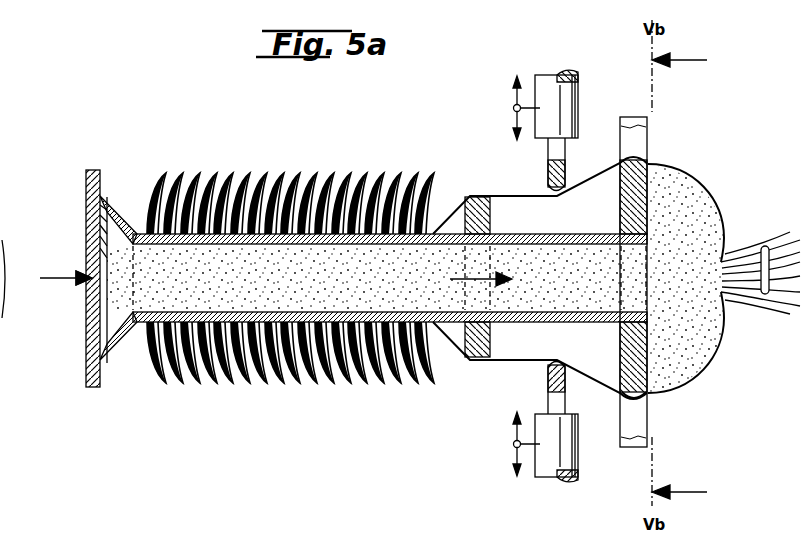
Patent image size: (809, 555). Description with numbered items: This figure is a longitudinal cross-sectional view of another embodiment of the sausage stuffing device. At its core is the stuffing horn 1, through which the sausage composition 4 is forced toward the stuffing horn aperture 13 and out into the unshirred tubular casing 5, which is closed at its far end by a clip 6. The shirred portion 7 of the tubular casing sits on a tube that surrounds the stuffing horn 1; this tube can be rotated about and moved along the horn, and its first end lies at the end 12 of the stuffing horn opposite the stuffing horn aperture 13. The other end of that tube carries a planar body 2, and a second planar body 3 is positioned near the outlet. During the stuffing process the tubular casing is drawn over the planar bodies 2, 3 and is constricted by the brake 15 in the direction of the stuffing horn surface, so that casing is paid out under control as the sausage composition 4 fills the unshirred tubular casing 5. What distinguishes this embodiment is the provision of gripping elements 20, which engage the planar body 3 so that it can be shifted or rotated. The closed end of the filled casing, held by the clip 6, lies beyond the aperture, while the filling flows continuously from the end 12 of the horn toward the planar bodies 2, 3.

The stuffing horn 1 is at (512, 322).
The planar body 2 is at (478, 350).
The planar body 3 is at (616, 386).
The sausage composition 4 is at (378, 293).
The unshirred tubular casing 5 is at (509, 196).
The closure tie 6 is at (765, 246).
The shirred portion 7 is at (341, 173).
The end of the stuffing horn 12 is at (113, 208).
The stuffing horn aperture 13 is at (650, 291).
The brake 15 is at (578, 96).
The gripping elements 20 is at (650, 128).